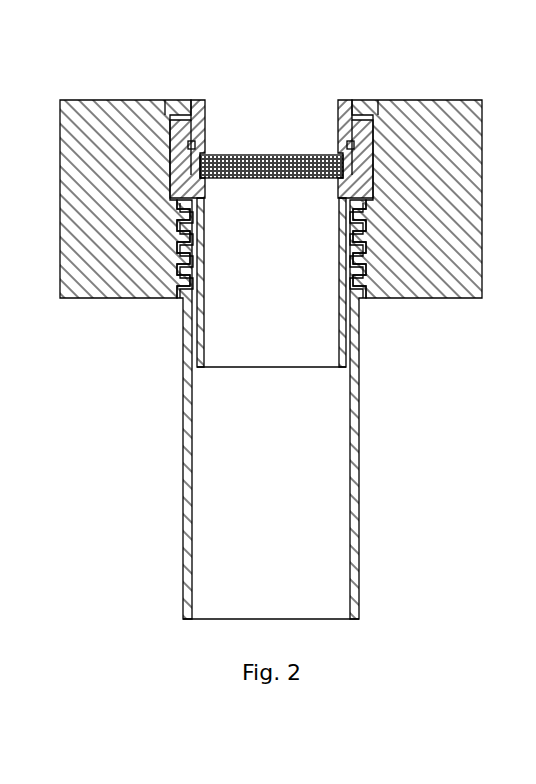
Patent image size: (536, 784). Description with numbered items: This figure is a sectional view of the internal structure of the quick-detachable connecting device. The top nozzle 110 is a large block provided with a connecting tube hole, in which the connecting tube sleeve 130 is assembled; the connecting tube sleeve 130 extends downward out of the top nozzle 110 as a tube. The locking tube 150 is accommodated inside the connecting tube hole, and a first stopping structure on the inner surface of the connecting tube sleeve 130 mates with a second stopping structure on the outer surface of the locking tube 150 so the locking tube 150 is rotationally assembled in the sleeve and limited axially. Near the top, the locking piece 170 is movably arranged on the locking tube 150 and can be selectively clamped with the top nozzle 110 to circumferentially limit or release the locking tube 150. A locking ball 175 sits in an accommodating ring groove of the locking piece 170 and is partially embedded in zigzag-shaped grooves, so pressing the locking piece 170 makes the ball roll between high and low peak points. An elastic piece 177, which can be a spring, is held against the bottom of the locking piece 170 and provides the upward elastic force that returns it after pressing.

The top nozzle 110 is at (90, 298).
The connecting tube sleeve 130 is at (352, 452).
The locking tube 150 is at (237, 367).
The locking piece 170 is at (360, 99).
The locking ball 175 is at (354, 143).
The elastic piece 177 is at (258, 157).